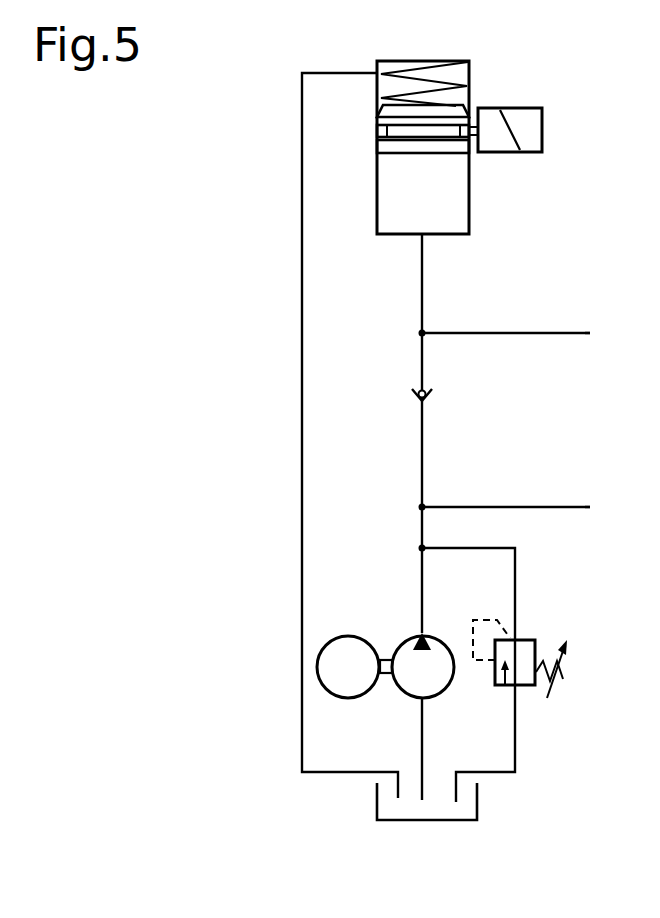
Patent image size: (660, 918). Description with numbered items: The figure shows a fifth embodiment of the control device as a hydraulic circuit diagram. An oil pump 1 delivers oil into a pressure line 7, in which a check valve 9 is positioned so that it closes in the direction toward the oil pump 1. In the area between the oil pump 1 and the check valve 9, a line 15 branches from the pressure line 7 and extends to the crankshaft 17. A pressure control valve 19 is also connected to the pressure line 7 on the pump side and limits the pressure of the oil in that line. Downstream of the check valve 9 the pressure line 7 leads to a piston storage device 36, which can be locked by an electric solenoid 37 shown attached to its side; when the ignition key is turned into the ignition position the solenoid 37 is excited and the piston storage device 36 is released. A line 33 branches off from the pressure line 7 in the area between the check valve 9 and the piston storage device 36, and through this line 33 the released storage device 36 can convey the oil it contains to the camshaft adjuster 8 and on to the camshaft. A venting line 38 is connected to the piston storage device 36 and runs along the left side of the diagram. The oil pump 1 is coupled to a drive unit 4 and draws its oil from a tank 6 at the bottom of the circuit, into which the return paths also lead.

The oil pump 1 is at (443, 703).
The electric motor 4 is at (352, 647).
The tank 6 is at (498, 807).
The pressure line 7 is at (420, 442).
The camshaft adjuster 8 is at (598, 330).
The check valve 9 is at (414, 391).
The line 15 is at (478, 504).
The crankshaft 17 is at (605, 504).
The pressure control valve 19 is at (522, 655).
The line 33 is at (535, 332).
The piston storage device 36 is at (480, 169).
The solenoid 37 is at (557, 110).
The venting line 38 is at (302, 310).